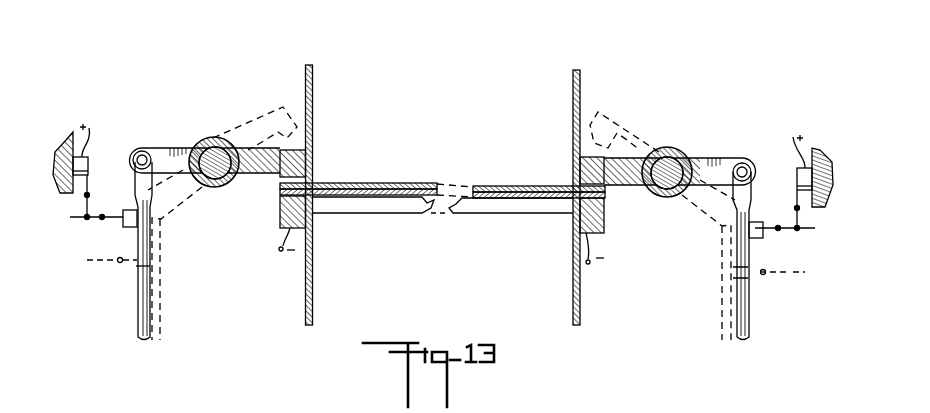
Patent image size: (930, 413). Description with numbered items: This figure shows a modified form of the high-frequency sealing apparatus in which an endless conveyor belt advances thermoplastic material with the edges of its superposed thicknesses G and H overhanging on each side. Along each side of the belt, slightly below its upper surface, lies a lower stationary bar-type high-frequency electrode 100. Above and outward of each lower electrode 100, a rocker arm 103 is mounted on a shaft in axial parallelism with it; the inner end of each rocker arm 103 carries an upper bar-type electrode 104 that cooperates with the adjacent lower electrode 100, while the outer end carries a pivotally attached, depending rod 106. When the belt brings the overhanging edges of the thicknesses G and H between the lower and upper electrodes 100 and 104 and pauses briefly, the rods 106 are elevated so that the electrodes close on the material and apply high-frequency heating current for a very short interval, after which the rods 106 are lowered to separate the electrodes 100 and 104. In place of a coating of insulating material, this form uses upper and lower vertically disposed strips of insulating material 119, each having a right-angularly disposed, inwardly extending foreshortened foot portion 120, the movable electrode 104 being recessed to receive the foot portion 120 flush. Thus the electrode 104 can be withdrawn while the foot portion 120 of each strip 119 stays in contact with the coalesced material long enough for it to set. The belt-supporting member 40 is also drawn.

The vertically disposed strip of insulating material 119 is at (310, 108).
The lower stationary bar-type electrode 100 is at (280, 224).
The upper bar-type high-frequency electrode 104 is at (578, 156).
The foot portion 120 is at (604, 213).
The rocker arm 103 is at (661, 158).
The rod 106 is at (137, 299).
The belt support plate 40 is at (487, 200).
The superposed thickness of thermoplastic material G is at (395, 187).
The superposed thickness of thermoplastic material H is at (527, 191).